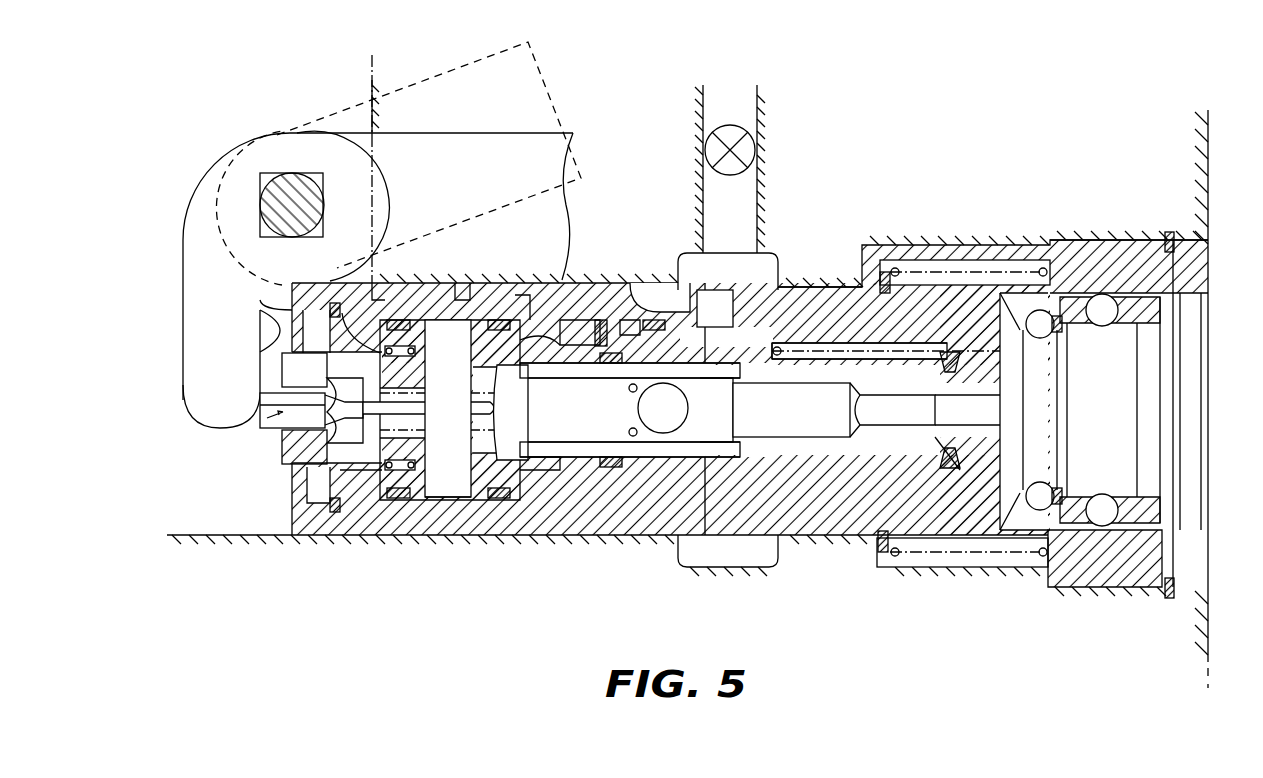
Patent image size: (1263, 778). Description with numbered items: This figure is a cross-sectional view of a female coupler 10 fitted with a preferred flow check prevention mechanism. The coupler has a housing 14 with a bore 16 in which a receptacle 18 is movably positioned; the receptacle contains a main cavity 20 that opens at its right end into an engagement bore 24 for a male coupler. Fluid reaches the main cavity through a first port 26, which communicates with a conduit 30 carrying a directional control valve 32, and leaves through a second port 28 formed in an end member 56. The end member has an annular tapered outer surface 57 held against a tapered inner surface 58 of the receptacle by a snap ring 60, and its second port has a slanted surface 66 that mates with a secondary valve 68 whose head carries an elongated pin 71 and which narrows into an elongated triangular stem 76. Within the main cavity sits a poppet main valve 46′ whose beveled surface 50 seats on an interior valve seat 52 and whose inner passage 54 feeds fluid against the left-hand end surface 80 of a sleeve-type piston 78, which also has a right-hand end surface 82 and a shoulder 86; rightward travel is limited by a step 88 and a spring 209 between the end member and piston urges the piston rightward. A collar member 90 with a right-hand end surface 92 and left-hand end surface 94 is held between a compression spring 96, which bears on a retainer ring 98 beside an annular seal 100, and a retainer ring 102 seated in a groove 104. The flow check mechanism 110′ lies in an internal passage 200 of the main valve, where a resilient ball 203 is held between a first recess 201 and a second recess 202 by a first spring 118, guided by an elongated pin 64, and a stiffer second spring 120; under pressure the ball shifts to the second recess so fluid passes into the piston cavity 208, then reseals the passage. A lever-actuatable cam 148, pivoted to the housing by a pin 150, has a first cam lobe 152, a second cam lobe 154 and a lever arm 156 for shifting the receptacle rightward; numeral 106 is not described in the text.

The female coupler 10 is at (961, 105).
The housing 14 is at (1210, 214).
The bore 16 is at (958, 262).
The receptacle 18 is at (673, 310).
The main cavity 20 is at (858, 305).
The engagement bore 24 is at (1017, 500).
The first port 26 is at (720, 285).
The second port 28 is at (300, 440).
The conduit 30 is at (758, 190).
The directional control valve 32 is at (740, 126).
The main valve 46′ is at (908, 414).
The beveled surface 50 is at (955, 475).
The interior valve seat 52 is at (962, 440).
The inner passage 54 is at (448, 408).
The end member 56 is at (305, 490).
The annular tapered outer surface 57 is at (378, 300).
The tapered inner surface 58 is at (378, 292).
The snap ring 60 is at (288, 326).
The elongated pin 64 is at (300, 392).
The slanted surface 66 is at (330, 380).
The secondary valve 68 is at (262, 420).
The elongated pin 71 is at (355, 475).
The elongated triangular stem 76 is at (260, 415).
The piston 78 is at (523, 483).
The left-hand end surface 80 is at (462, 300).
The right-hand end surface 82 is at (715, 308).
The shoulder 86 is at (528, 412).
The step 88 is at (560, 340).
The collar member 90 is at (645, 320).
The right-hand end surface 92 is at (790, 343).
The left-hand end surface 94 is at (628, 320).
The compression spring 96 is at (818, 327).
The retainer ring 98 is at (988, 411).
The annular seal 100 is at (950, 375).
The retainer ring 102 is at (580, 310).
The groove 104 is at (605, 318).
The port 106 is at (520, 300).
The flow check mechanism 110′ is at (503, 452).
The first spring 118 is at (622, 398).
The second spring 120 is at (797, 438).
The lever-actuatable cam 148 is at (207, 180).
The pin 150 is at (282, 178).
The first cam lobe 152 is at (292, 312).
The second cam lobe 154 is at (258, 404).
The lever arm 156 is at (567, 133).
The internal passage 200 is at (862, 428).
The first recess 201 is at (775, 410).
The second recess 202 is at (588, 450).
The resilient ball 203 is at (686, 420).
The piston cavity 208 is at (447, 495).
The spring 209 is at (470, 352).